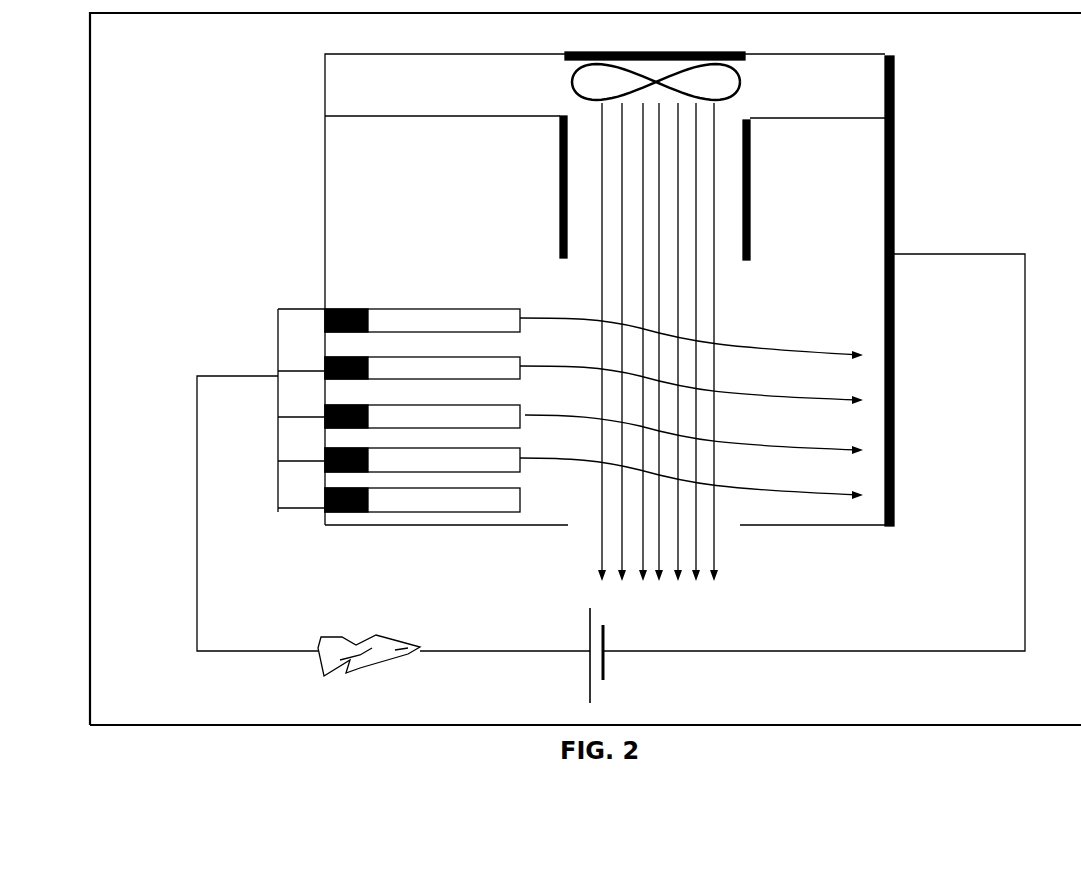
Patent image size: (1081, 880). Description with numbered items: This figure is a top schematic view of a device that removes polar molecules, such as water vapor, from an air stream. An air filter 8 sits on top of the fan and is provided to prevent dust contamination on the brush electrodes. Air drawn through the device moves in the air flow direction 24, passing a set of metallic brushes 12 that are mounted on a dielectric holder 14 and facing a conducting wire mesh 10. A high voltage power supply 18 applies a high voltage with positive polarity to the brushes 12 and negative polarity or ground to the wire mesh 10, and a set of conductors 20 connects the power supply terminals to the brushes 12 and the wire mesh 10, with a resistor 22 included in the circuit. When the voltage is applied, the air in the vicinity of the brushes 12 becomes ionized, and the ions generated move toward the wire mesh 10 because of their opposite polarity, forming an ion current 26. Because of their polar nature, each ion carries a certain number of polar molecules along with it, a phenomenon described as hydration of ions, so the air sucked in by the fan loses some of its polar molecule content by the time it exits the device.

The air filter 8 is at (655, 52).
The conducting wire mesh 10 is at (894, 170).
The metallic brushes 12 is at (399, 408).
The dielectric holder 14 is at (346, 510).
The high voltage power supply 18 is at (608, 633).
The conductors 20 is at (197, 487).
The resistor 22 is at (361, 645).
The air flow direction 24 is at (600, 290).
The ion current 26 is at (745, 347).